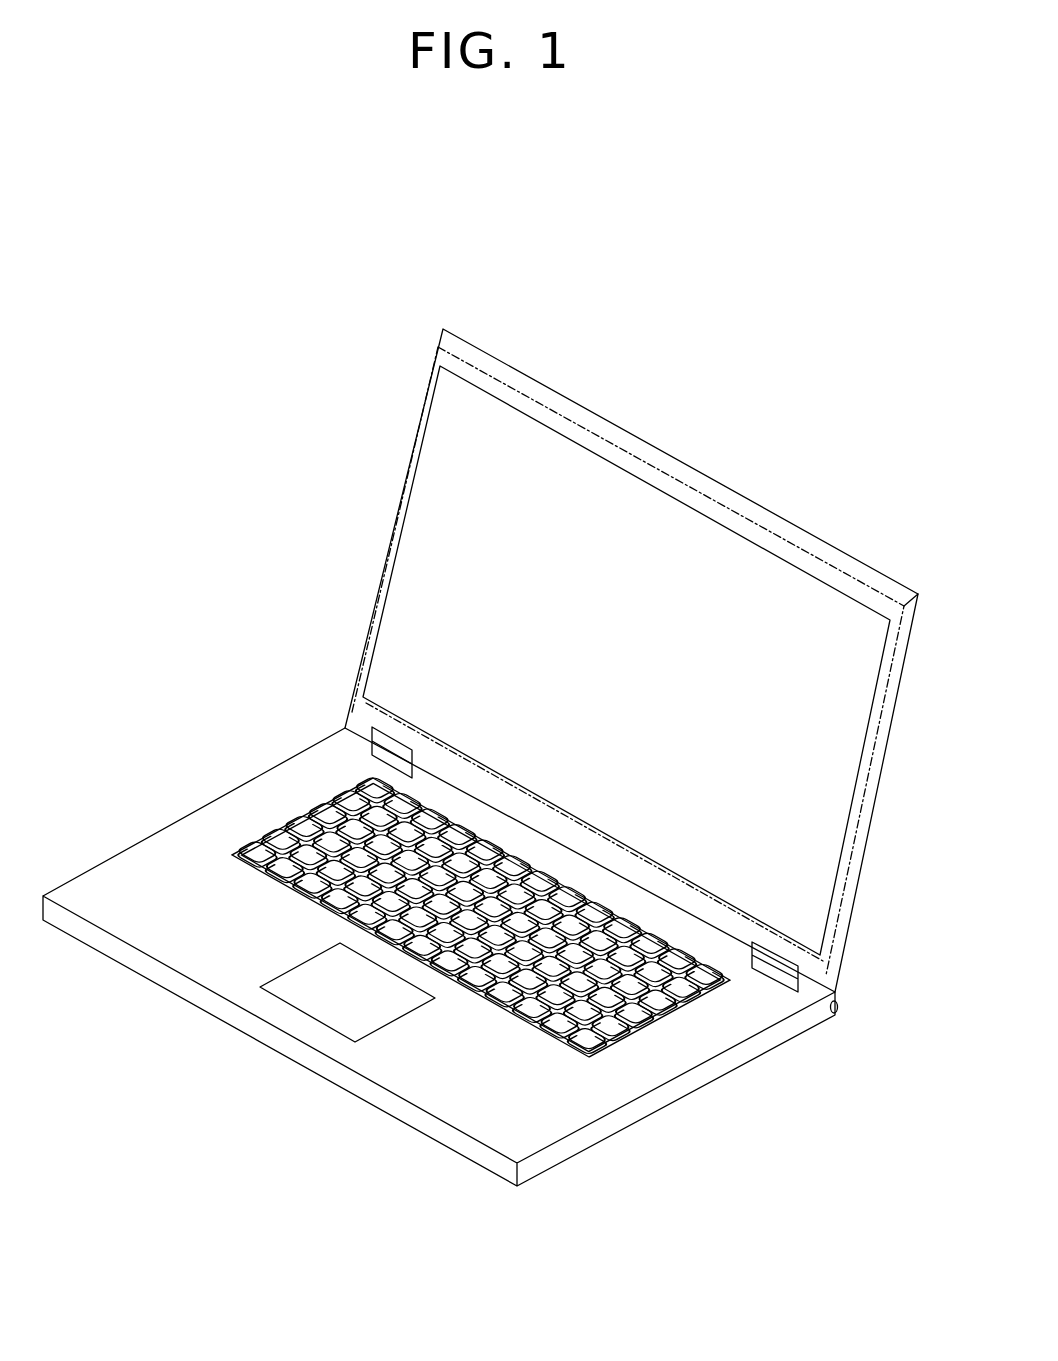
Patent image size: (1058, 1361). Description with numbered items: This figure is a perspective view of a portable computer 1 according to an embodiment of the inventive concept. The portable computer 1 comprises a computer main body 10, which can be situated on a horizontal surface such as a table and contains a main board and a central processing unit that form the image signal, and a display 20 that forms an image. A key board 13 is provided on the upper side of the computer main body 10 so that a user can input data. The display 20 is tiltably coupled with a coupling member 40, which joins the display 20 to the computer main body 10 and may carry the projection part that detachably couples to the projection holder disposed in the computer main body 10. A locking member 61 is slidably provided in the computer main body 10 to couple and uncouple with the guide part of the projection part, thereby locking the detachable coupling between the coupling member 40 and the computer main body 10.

The portable computer 1 is at (197, 655).
The computer main body 10 is at (568, 1158).
The key board 13 is at (605, 1043).
The display 20 is at (872, 818).
The coupling member 40 is at (783, 993).
The locking member 61 is at (837, 1008).